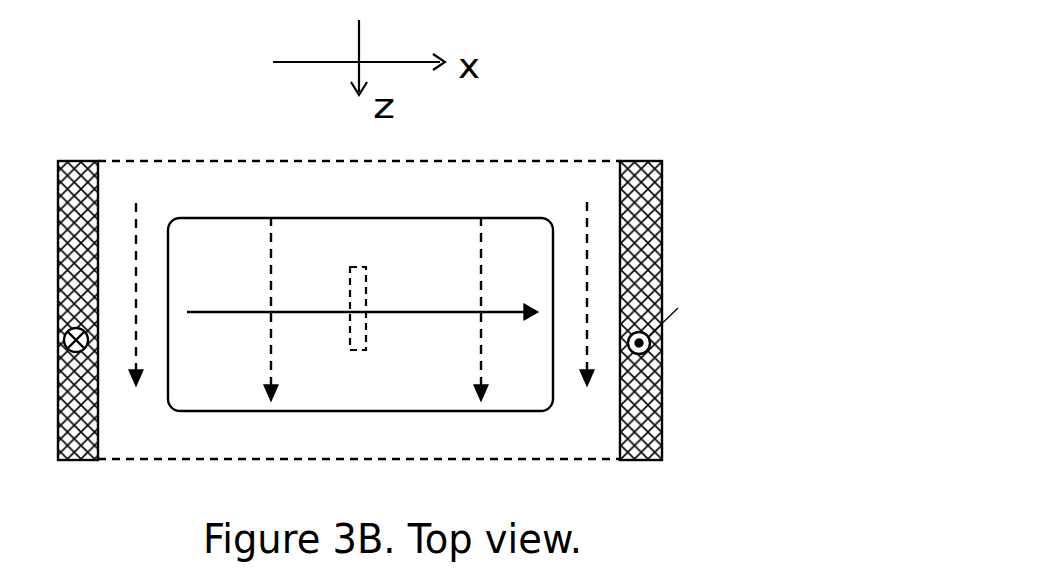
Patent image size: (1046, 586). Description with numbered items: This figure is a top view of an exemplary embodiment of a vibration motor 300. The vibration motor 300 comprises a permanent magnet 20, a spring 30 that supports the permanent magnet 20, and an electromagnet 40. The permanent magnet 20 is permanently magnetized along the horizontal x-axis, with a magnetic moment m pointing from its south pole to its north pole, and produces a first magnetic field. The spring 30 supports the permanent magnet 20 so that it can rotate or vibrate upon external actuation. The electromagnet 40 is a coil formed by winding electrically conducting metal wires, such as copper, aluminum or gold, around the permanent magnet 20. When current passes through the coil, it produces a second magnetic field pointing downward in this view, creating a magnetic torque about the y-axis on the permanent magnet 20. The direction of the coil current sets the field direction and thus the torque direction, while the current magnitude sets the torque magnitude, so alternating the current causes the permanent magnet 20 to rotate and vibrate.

The vibration motor 300 is at (588, 45).
The permanent magnet 20 is at (423, 243).
The spring 30 is at (359, 290).
The electromagnet 40 is at (657, 457).